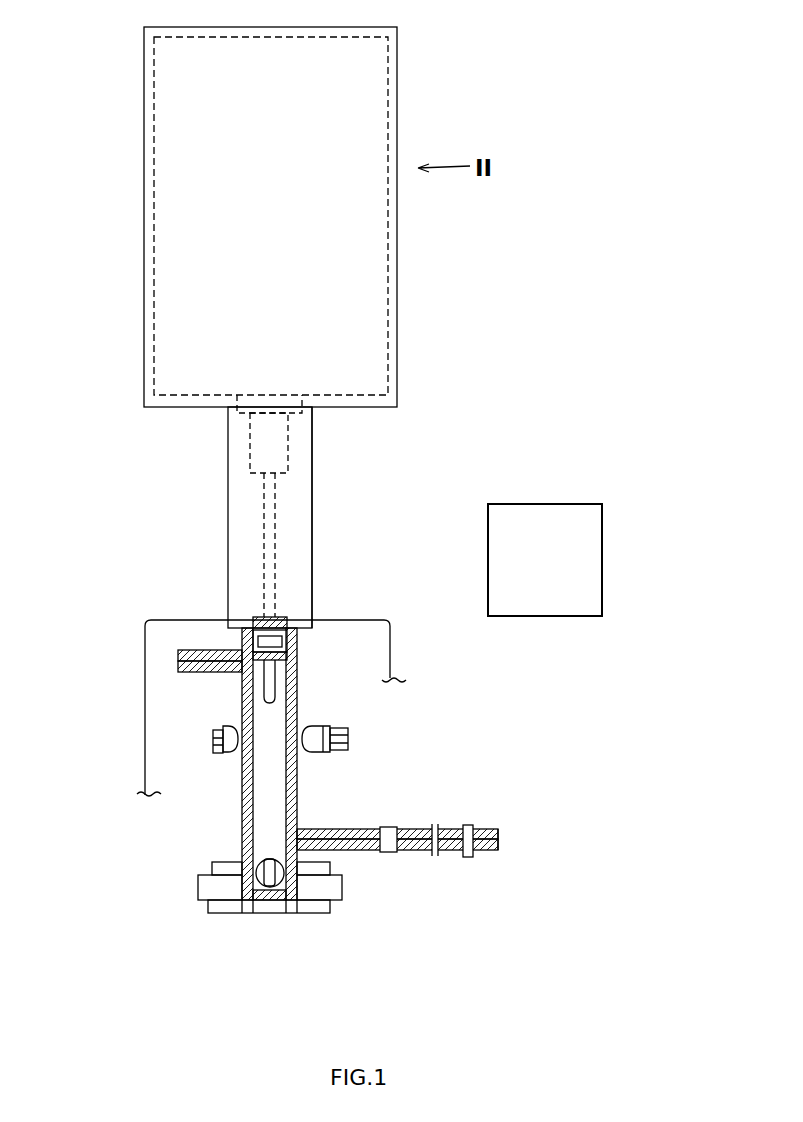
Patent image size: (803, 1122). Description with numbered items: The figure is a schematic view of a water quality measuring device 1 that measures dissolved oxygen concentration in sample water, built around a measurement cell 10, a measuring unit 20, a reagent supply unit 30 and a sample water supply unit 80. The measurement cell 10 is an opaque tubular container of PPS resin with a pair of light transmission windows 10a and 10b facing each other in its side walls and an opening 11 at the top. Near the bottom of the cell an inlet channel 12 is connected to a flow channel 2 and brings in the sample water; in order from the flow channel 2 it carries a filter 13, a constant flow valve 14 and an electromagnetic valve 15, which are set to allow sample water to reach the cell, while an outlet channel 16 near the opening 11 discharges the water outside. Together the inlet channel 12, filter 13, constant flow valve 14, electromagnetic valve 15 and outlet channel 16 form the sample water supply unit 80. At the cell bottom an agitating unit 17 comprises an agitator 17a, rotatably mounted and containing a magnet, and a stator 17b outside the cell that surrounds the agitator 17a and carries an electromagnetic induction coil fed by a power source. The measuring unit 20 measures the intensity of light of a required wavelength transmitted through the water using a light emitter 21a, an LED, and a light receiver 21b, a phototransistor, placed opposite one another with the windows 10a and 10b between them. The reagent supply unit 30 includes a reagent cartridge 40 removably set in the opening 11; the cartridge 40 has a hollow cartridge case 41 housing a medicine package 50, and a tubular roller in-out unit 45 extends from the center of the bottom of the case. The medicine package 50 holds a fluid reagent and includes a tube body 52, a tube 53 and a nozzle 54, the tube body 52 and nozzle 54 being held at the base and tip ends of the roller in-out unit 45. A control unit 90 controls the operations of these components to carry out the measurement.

The water quality measuring device 1 is at (456, 450).
The flow channel 2 is at (483, 830).
The measurement cell 10 is at (269, 734).
The light transmission window 10a is at (243, 745).
The light transmission window 10b is at (294, 750).
The opening 11 is at (232, 637).
The inlet channel 12 is at (448, 825).
The filter 13 is at (468, 857).
The constant flow valve 14 is at (435, 856).
The electromagnetic valve 15 is at (388, 853).
The outlet channel 16 is at (190, 650).
The agitating unit 17 is at (244, 893).
The agitator 17a is at (265, 858).
The stator 17b is at (333, 912).
The measuring unit 20 is at (304, 725).
The light emitter 21a is at (318, 733).
The light receiver 21b is at (215, 738).
The reagent supply unit 30 is at (320, 465).
The reagent cartridge 40 is at (400, 127).
The cartridge case 41 is at (400, 270).
The roller in-out unit 45 is at (298, 520).
The medicine package 50 is at (172, 170).
The tube body 52 is at (265, 438).
The tube 53 is at (262, 507).
The nozzle 54 is at (270, 690).
The sample water supply unit 80 is at (393, 808).
The control unit 90 is at (590, 556).